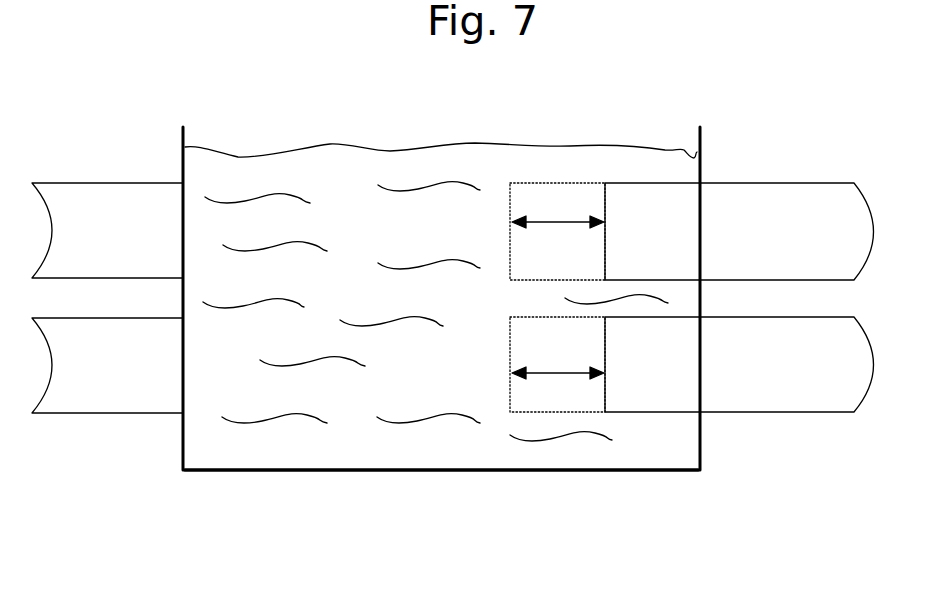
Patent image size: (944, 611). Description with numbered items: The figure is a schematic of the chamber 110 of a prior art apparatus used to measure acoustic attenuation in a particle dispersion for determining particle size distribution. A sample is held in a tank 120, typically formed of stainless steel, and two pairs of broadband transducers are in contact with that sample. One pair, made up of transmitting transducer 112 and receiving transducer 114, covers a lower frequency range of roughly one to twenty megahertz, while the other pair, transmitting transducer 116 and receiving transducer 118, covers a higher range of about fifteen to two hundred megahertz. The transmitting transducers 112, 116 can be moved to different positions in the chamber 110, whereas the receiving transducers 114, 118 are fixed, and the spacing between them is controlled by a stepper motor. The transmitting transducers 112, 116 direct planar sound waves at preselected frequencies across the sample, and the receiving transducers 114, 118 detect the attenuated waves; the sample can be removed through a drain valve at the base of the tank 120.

The chamber 110 is at (700, 490).
The transmitting transducer 112 is at (757, 183).
The receiving transducer 114 is at (107, 183).
The transmitting transducer 116 is at (777, 412).
The receiving transducer 118 is at (126, 413).
The tank 120 is at (412, 470).